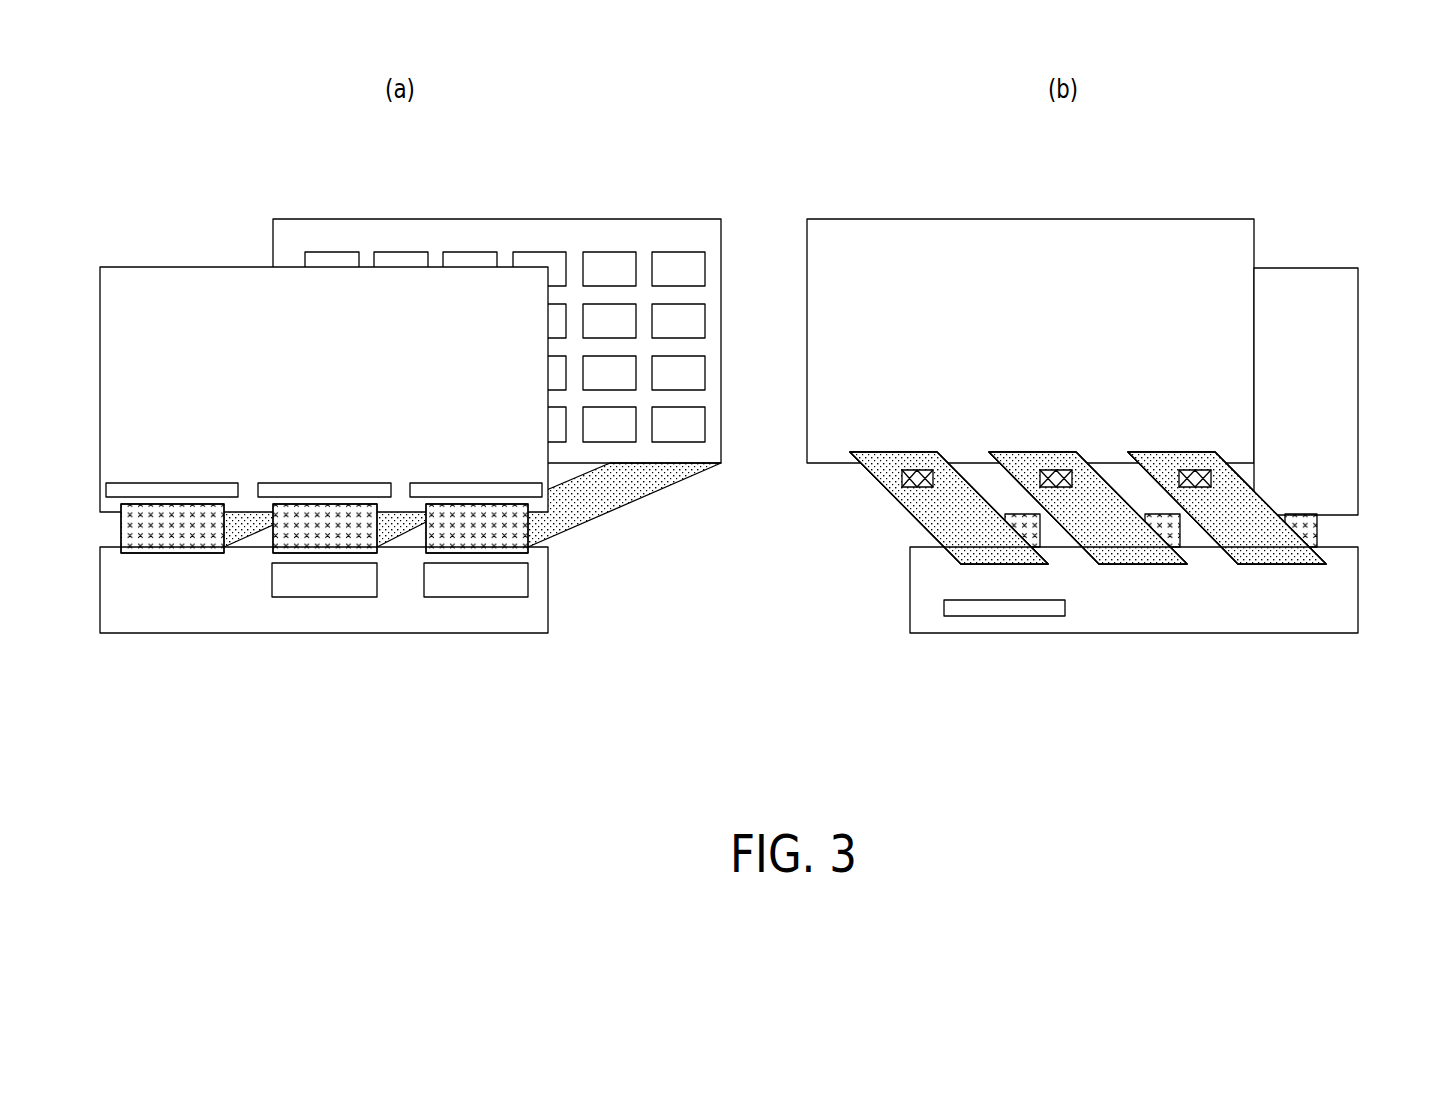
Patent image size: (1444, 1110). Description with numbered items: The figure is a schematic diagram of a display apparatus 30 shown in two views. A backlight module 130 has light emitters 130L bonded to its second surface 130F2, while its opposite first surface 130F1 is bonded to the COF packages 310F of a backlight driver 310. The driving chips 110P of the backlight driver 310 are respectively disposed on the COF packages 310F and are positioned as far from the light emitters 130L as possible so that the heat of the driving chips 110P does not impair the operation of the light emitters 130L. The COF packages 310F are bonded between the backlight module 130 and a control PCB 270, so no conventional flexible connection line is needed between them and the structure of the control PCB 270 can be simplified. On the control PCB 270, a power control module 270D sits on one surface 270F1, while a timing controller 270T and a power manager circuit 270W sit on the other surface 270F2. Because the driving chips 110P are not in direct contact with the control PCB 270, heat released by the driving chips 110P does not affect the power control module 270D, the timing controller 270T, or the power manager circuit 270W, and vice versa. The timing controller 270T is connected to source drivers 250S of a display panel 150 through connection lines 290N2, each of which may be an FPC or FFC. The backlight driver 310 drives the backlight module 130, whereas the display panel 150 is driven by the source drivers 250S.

The display apparatus 30 is at (168, 120).
The backlight module 130 is at (763, 276).
The first surface 130F1 is at (1029, 305).
The second surface 130F2 is at (682, 227).
The light emitters 130L is at (331, 258).
The display panel 150 is at (156, 275).
The source drivers 250S is at (168, 488).
The connection lines 290N2 is at (168, 545).
The COF packages 310F is at (677, 475).
The backlight driver 310 is at (1035, 407).
The driving chips 110P is at (1217, 393).
The control PCB 270 is at (729, 665).
The surface 270F1 is at (922, 610).
The surface 270F2 is at (537, 608).
The timing controller 270T is at (292, 590).
The power manager circuit 270W is at (443, 590).
The power control module 270D is at (992, 650).